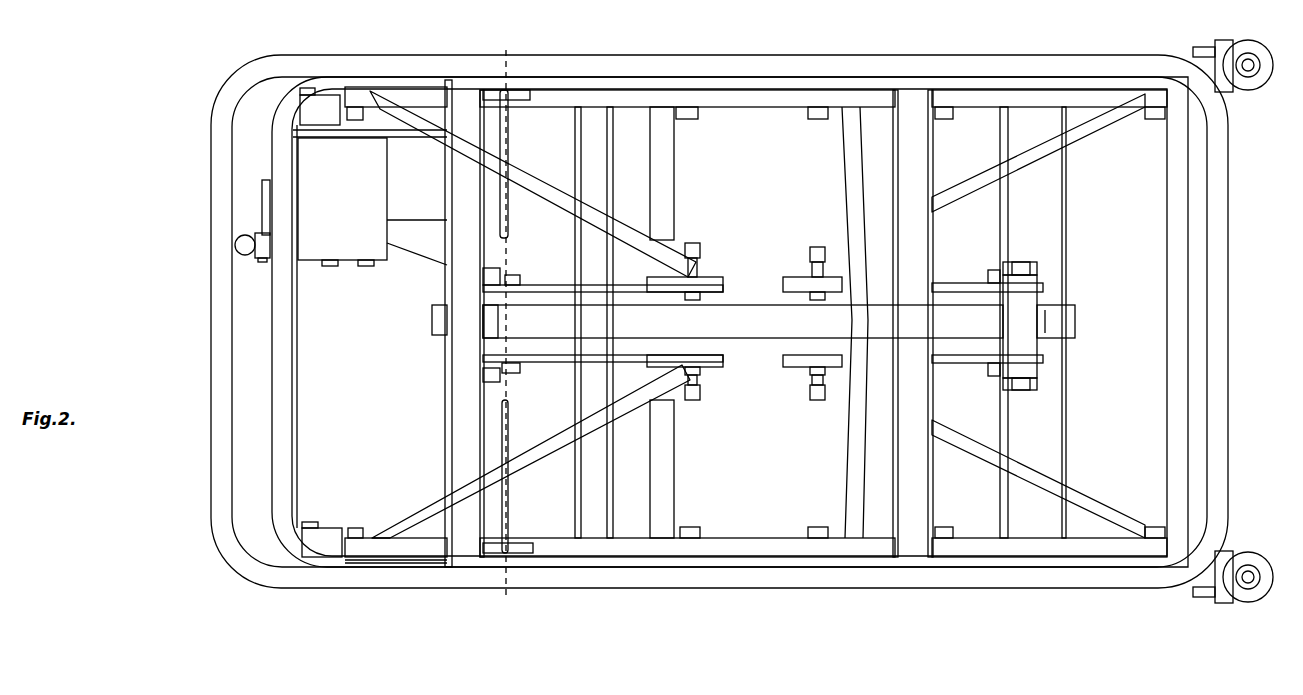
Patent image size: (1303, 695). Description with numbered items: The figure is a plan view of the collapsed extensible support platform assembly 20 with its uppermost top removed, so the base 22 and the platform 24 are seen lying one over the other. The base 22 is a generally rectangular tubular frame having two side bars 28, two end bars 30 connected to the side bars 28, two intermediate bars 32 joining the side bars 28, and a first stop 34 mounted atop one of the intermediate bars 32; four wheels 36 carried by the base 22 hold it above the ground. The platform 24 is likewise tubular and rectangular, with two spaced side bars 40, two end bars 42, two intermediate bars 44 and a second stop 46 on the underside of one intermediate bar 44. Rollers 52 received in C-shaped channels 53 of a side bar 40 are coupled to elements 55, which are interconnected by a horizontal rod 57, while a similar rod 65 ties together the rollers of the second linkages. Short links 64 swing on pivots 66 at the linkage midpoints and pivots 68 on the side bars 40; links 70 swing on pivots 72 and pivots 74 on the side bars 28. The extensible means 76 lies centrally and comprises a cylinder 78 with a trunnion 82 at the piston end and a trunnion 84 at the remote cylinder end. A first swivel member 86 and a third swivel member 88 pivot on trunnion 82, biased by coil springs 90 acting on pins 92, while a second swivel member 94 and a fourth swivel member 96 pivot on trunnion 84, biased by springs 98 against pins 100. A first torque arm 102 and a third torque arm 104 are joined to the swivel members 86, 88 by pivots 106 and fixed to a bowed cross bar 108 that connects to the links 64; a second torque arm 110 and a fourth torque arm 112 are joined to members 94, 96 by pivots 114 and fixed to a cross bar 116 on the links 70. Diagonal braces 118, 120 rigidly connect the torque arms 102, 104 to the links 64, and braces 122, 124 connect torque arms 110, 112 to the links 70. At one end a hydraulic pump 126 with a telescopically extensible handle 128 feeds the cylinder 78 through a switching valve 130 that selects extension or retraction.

The extensible support platform assembly 20 is at (170, 326).
The base 22 is at (206, 521).
The platform 24 is at (264, 118).
The side bars 28 is at (308, 62).
The end bars 30 is at (213, 296).
The intermediate bars 32 is at (605, 458).
The first stop 34 is at (1075, 320).
The wheels 36 is at (300, 92).
The side bars 40 is at (745, 60).
The end bars 42 is at (292, 318).
The intermediate bars 44 is at (930, 180).
The second stop 46 is at (432, 320).
The rollers 52 is at (485, 575).
The C-shaped channels 53 is at (745, 95).
The elements 55 is at (530, 100).
The horizontal rod 57 is at (508, 155).
The links 64 is at (968, 105).
The rod 65 is at (1010, 190).
The pivot 66 is at (822, 118).
The pivot 68 is at (1152, 118).
The links 70 is at (625, 98).
The pivots 72 is at (690, 118).
The pivot 74 is at (352, 122).
The extensible means 76 is at (738, 302).
The cylinder 78 is at (745, 345).
The trunnion 82 is at (1040, 298).
The trunnion 84 is at (480, 357).
The first elongated swivel member 86 is at (938, 362).
The third elongated swivel member 88 is at (938, 284).
The coil springs 90 is at (1040, 268).
The pins 92 is at (1000, 262).
The second elongated swivel member 94 is at (585, 368).
The fourth elongated swivel member 96 is at (584, 275).
The springs 98 is at (500, 265).
The pins 100 is at (518, 277).
The first torque arm 102 is at (812, 383).
The third torque arm 104 is at (812, 262).
The pivots 106 is at (818, 243).
The cross bar 108 is at (848, 455).
The second torque arm 110 is at (648, 373).
The fourth torque arm 112 is at (648, 273).
The pivots 114 is at (698, 243).
The cross bar 116 is at (652, 170).
The brace 118 is at (1075, 500).
The brace 120 is at (1075, 140).
The brace 122 is at (555, 462).
The brace 124 is at (560, 205).
The hydraulic pump 126 is at (352, 260).
The handle 128 is at (237, 245).
The switching valve 130 is at (262, 185).